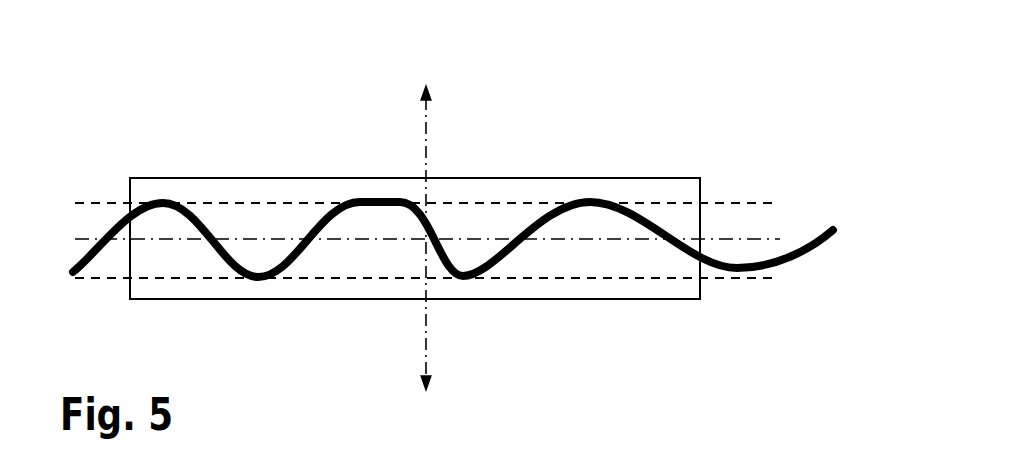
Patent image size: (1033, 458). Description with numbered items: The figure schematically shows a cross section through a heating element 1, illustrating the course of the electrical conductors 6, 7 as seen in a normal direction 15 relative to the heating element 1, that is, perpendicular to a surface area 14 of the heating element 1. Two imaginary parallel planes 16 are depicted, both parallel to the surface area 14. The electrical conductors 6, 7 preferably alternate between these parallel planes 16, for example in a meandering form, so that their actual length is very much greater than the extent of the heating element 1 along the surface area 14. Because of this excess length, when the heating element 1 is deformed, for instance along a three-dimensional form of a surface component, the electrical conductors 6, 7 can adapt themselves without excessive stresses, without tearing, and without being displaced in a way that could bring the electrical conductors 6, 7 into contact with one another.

The heating element 1 is at (106, 142).
The normal direction 15 is at (426, 139).
The electrical conductor 6 is at (453, 170).
The electrical conductor 7 is at (663, 222).
The surface area 14 is at (737, 237).
The parallel planes 16 is at (775, 200).